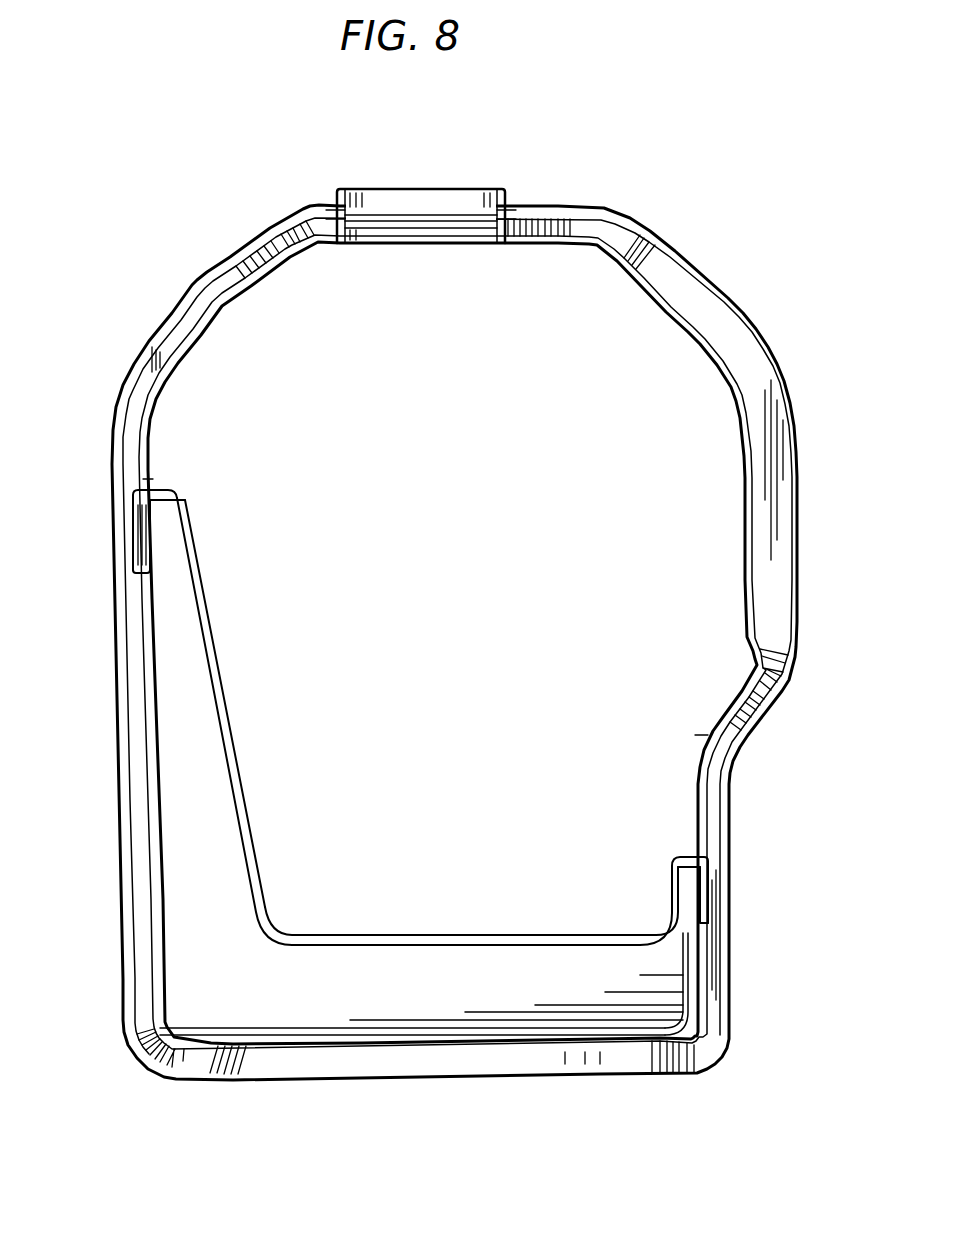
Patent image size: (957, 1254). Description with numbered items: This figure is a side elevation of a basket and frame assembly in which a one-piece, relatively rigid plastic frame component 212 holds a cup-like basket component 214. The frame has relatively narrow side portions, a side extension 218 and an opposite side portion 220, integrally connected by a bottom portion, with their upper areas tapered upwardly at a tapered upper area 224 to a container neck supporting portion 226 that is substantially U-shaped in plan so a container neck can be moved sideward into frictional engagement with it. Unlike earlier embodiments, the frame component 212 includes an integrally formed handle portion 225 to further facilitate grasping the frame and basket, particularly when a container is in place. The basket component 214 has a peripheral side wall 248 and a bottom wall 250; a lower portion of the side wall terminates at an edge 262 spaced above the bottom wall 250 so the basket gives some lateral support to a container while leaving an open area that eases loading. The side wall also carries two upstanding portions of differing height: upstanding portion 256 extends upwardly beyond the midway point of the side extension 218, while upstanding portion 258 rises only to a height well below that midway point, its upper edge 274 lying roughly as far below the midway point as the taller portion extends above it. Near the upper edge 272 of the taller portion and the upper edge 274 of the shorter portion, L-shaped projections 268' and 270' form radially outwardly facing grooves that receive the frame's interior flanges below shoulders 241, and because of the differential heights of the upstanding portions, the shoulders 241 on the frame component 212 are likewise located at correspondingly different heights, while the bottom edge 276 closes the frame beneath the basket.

The frame component 212 is at (758, 312).
The basket component 214 is at (287, 822).
The side extension 218 is at (121, 778).
The side portion 220 is at (731, 836).
The tapered upper area 224 is at (200, 282).
The handle portion 225 is at (780, 540).
The container neck supporting portion 226 is at (535, 188).
The shoulders 241 is at (150, 477).
The peripheral side wall 248 is at (232, 977).
The bottom wall 250 is at (282, 1040).
The upstanding portion 256 is at (188, 623).
The upstanding portion 258 is at (685, 903).
The edge 262 is at (452, 940).
The L-shaped projection 268' is at (87, 567).
The L-shaped projection 270' is at (756, 895).
The upper edge 272 is at (172, 488).
The upper edge 274 is at (690, 855).
The bottom edge 276 is at (402, 1078).